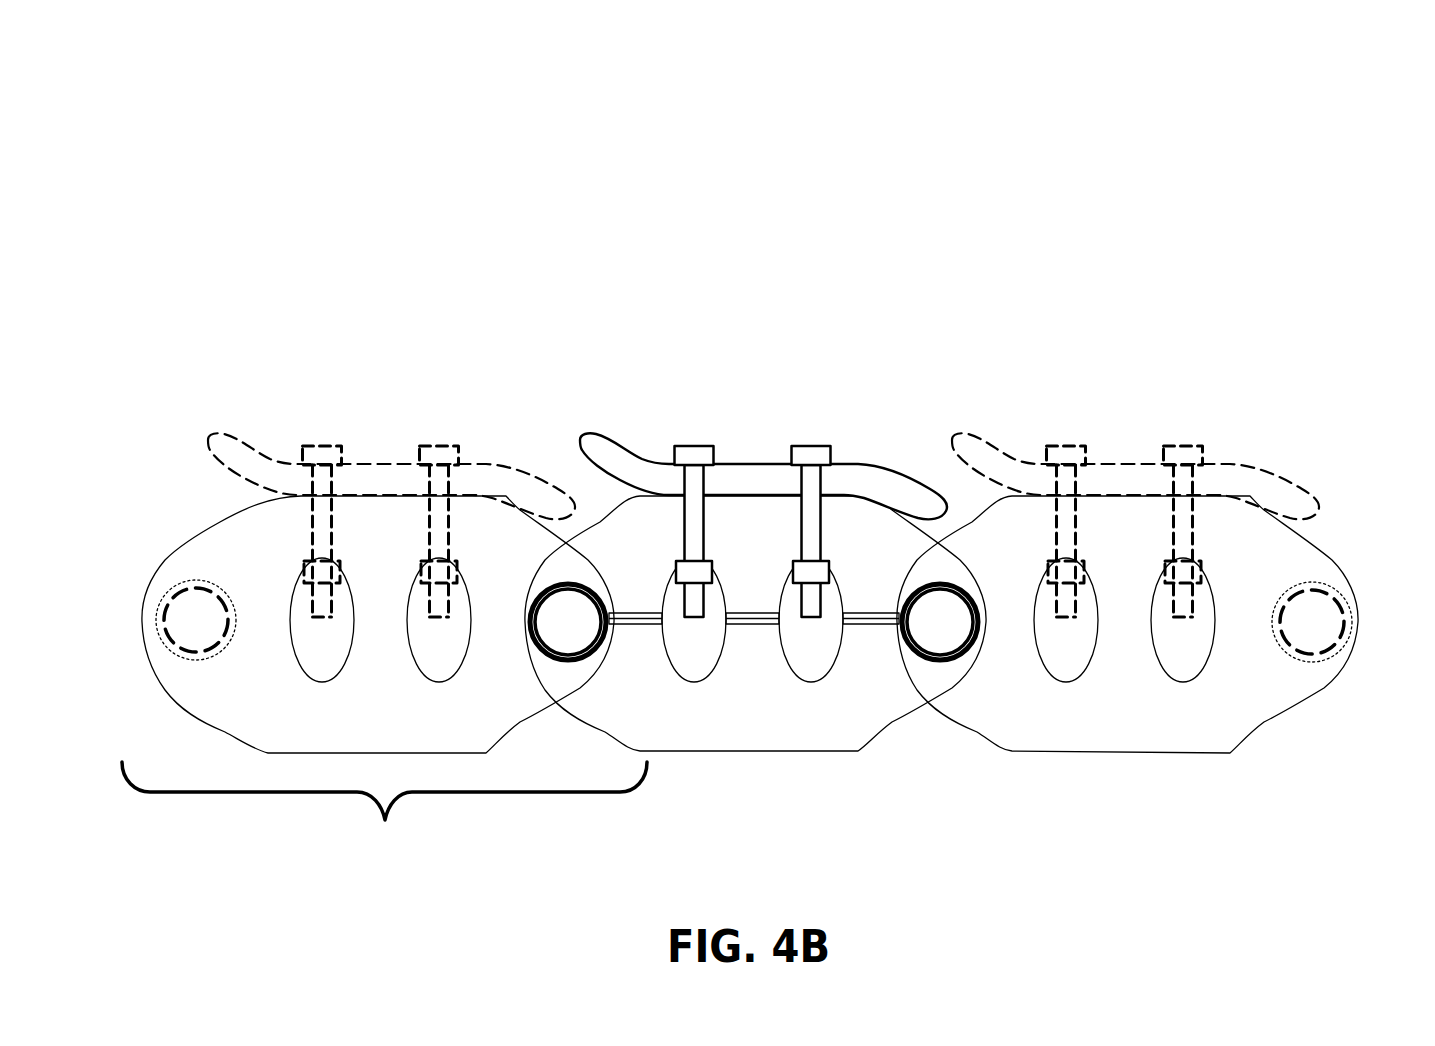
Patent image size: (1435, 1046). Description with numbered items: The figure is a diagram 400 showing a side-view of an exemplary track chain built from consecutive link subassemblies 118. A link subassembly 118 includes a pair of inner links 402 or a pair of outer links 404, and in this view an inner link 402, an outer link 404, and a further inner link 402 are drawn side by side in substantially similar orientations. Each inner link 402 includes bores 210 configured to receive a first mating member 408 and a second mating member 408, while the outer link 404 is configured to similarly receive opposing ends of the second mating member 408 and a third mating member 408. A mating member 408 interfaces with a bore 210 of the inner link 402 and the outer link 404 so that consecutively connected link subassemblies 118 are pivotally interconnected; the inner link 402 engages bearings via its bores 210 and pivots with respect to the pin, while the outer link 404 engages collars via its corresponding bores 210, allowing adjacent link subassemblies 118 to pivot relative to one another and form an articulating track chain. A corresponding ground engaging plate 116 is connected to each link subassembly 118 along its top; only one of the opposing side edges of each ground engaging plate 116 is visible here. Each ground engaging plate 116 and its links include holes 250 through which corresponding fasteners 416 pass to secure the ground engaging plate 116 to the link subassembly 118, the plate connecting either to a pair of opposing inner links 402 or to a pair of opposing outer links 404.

The diagram 400 is at (232, 66).
The inner link 402 is at (264, 374).
The outer link 404 is at (672, 377).
The ground engaging plate 116 is at (231, 450).
The fastener 416 is at (323, 443).
The hole 250 is at (428, 521).
The bore 210 is at (215, 593).
The mating member 408 is at (212, 620).
The link subassembly 118 is at (384, 815).